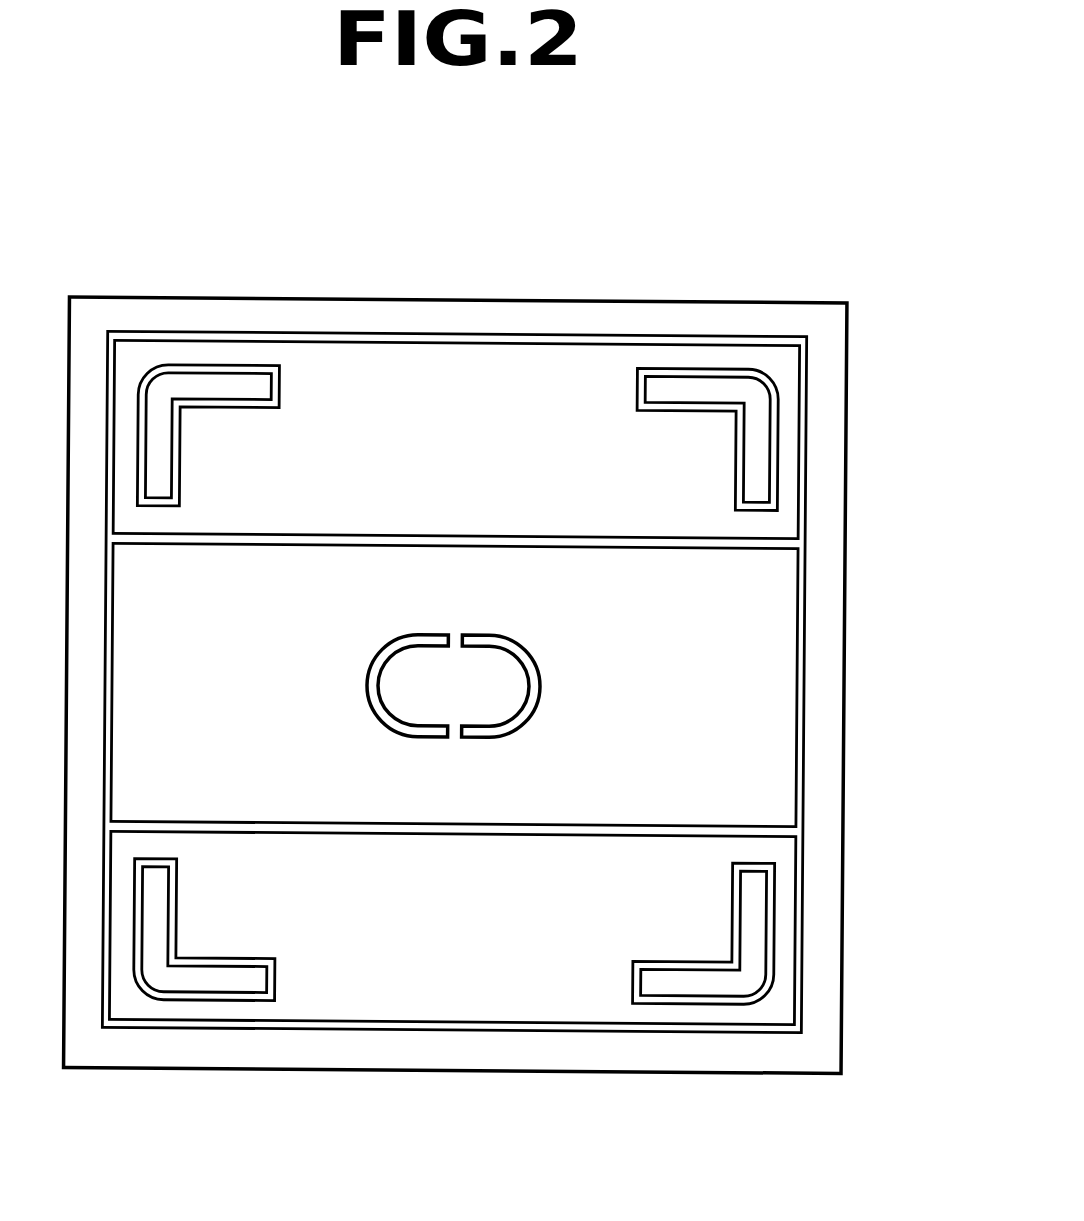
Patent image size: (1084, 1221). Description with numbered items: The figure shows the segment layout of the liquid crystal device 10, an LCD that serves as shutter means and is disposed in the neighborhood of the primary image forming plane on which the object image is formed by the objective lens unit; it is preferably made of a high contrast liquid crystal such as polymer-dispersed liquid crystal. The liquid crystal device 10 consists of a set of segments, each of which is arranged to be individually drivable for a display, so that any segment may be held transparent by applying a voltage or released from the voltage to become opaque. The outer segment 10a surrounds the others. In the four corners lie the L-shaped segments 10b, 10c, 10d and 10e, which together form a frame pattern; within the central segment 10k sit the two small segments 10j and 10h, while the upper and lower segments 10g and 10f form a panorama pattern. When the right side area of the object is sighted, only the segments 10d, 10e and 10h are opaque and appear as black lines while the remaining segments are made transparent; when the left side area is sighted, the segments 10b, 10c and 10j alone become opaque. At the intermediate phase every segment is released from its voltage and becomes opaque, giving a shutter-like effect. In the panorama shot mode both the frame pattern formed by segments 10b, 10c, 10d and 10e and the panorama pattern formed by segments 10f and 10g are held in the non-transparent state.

The liquid crystal device 10 is at (443, 1077).
The segment 10a is at (434, 317).
The segment 10b is at (229, 385).
The segment 10c is at (214, 982).
The segment 10d is at (674, 981).
The segment 10e is at (680, 385).
The segment 10f is at (703, 856).
The segment 10g is at (681, 516).
The segment 10h is at (538, 684).
The segment 10j is at (367, 683).
The segment 10k is at (733, 673).